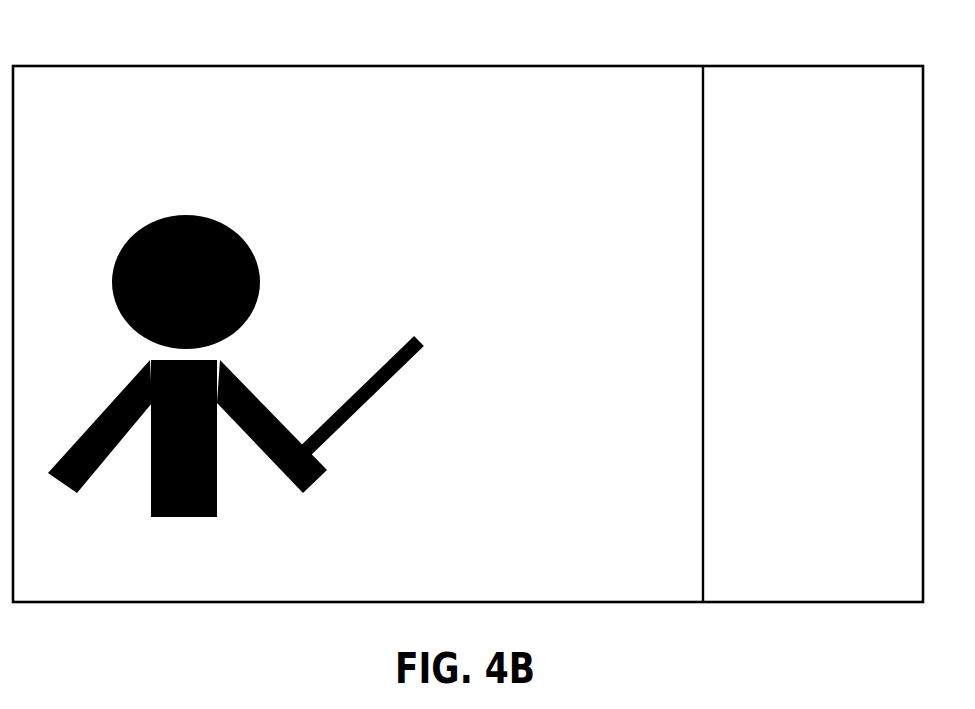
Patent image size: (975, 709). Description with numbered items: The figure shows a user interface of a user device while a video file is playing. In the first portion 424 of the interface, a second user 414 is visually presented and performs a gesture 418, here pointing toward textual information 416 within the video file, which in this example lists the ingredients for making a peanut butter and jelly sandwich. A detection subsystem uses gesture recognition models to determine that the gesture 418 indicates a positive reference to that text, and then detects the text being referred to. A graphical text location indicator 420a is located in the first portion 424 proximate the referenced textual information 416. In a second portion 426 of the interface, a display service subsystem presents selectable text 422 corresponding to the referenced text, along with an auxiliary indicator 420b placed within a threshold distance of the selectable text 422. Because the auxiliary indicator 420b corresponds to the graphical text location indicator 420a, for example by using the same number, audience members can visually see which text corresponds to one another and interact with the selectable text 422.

The second user 414 is at (280, 310).
The textual information 416 is at (588, 338).
The gesture 418 is at (400, 330).
The graphical text location indicator 420a is at (440, 312).
The auxiliary indicator 420b is at (718, 110).
The selectable text 422 is at (780, 102).
The first portion 424 is at (185, 88).
The second portion 426 is at (803, 577).